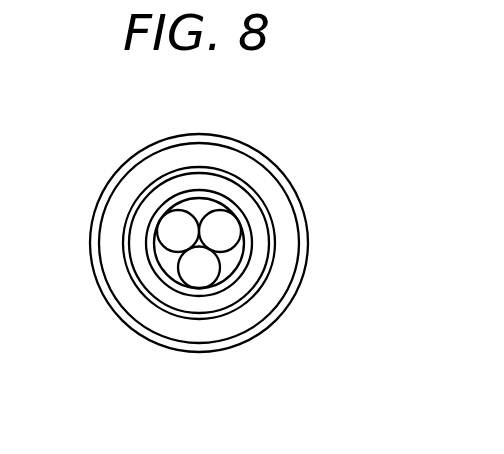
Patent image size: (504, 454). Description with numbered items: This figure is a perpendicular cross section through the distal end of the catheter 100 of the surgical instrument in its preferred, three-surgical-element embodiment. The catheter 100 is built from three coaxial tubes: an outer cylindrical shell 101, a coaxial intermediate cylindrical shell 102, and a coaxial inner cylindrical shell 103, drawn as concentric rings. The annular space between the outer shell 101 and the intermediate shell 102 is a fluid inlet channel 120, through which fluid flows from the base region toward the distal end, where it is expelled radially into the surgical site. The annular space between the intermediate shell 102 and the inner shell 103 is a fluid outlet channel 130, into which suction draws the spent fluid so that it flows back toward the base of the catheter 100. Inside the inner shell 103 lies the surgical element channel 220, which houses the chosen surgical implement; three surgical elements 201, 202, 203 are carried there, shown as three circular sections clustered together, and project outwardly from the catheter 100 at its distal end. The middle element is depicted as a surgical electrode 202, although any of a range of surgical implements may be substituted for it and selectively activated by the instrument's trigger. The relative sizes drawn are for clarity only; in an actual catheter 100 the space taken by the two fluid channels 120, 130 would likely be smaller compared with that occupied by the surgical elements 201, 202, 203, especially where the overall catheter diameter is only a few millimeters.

The catheter 100 is at (112, 148).
The outer cylindrical shell 101 is at (163, 137).
The fluid inlet channel 120 is at (208, 152).
The intermediate cylindrical shell 102 is at (232, 172).
The fluid outlet channel 130 is at (245, 198).
The inner cylindrical shell 103 is at (243, 250).
The surgical element channel 220 is at (237, 260).
The surgical element 201 is at (168, 228).
The surgical electrode 202 is at (228, 227).
The surgical element 203 is at (208, 273).